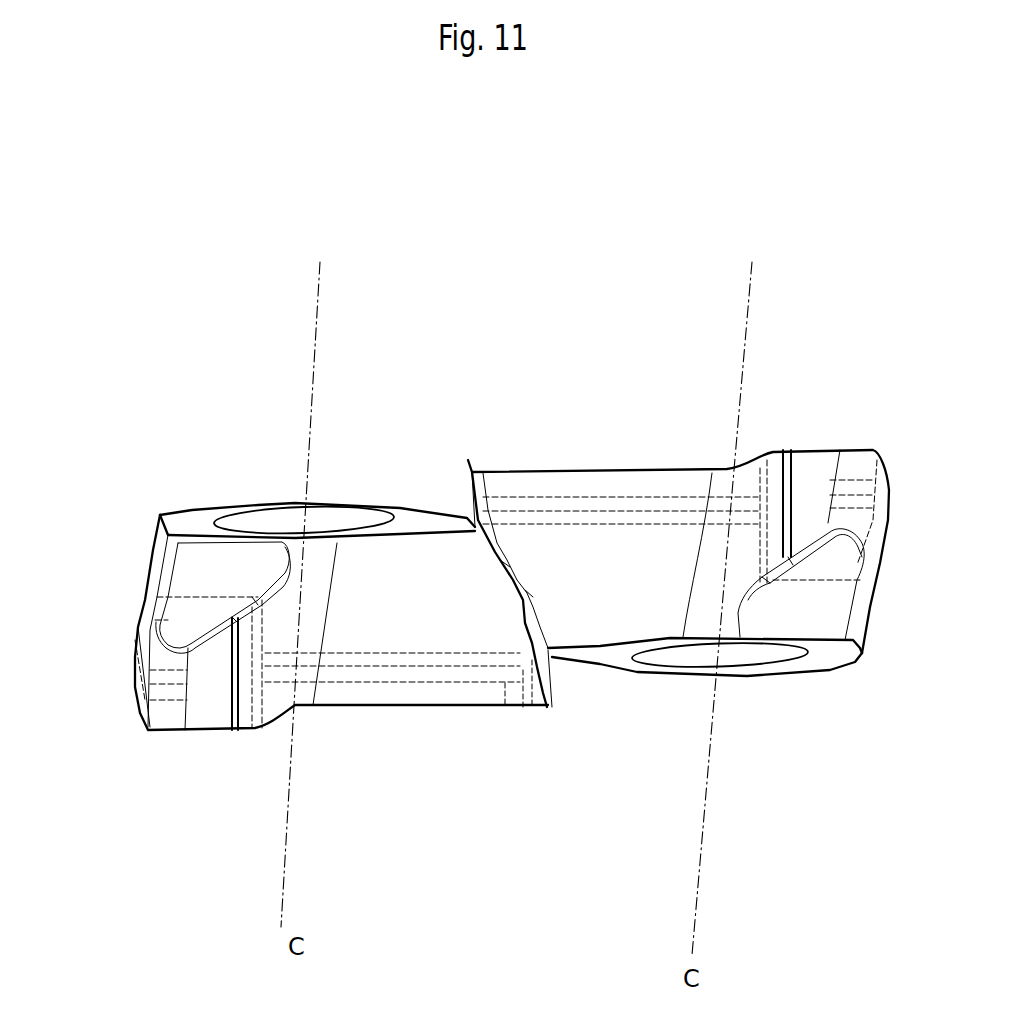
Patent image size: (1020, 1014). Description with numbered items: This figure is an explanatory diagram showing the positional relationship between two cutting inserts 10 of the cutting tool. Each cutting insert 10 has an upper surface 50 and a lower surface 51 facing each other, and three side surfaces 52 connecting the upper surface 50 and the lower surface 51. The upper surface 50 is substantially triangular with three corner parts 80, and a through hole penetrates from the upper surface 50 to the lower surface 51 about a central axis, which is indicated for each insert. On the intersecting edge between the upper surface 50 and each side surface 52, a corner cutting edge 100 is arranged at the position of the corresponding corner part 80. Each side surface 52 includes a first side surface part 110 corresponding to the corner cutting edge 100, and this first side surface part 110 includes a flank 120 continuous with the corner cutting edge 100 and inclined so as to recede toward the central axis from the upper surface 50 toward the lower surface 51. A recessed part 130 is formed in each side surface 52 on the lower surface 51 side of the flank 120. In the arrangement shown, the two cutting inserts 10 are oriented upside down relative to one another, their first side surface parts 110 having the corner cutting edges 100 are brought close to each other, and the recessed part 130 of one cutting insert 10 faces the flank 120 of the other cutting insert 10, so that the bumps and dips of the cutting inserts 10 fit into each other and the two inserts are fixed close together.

The cutting insert 10 is at (127, 626).
The upper surface 50 is at (283, 718).
The lower surface 51 is at (193, 522).
The side surface 52 is at (528, 502).
The corner part 80 is at (482, 472).
The corner cutting edge 100 is at (468, 460).
The first side surface part 110 is at (478, 528).
The flank 120 is at (495, 510).
The recessed part 130 is at (477, 567).